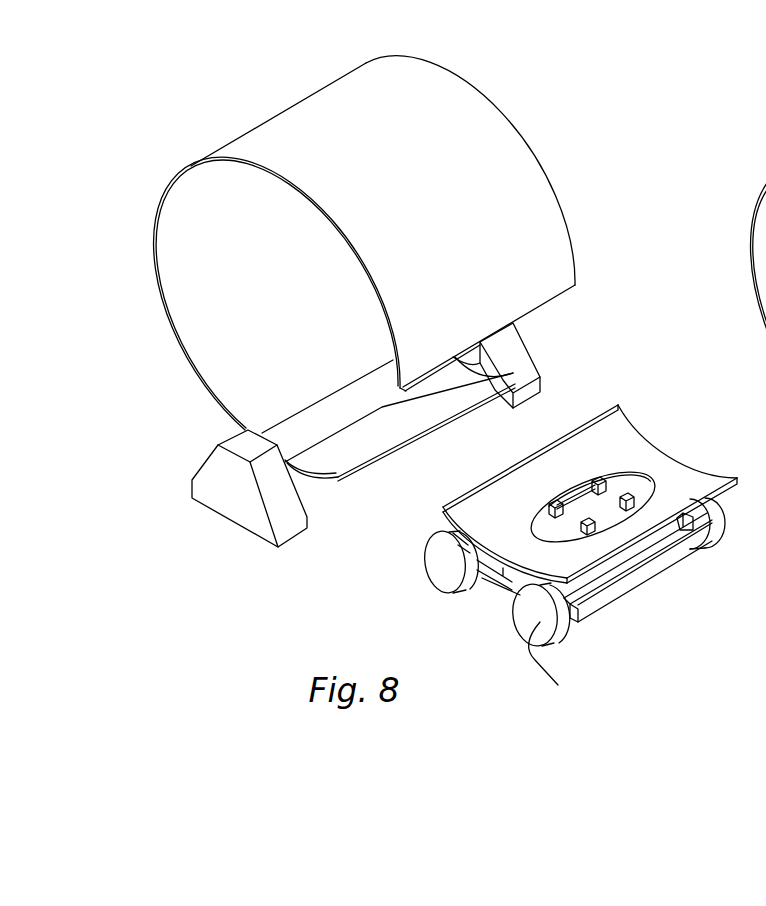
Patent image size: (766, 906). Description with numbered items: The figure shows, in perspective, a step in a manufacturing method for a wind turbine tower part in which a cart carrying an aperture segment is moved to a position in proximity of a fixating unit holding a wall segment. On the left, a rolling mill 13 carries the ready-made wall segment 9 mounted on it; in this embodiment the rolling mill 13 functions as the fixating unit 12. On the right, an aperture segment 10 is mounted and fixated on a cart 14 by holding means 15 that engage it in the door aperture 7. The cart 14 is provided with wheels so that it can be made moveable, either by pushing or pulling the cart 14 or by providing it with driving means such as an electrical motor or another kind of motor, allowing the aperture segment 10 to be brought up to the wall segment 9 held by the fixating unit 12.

The wall segment 9 is at (480, 127).
The fixating unit 12 is at (234, 566).
The rolling mill 13 is at (217, 498).
The aperture segment 10 is at (680, 475).
The door aperture 7 is at (633, 470).
The holding means 15 is at (596, 480).
The cart 14 is at (672, 561).